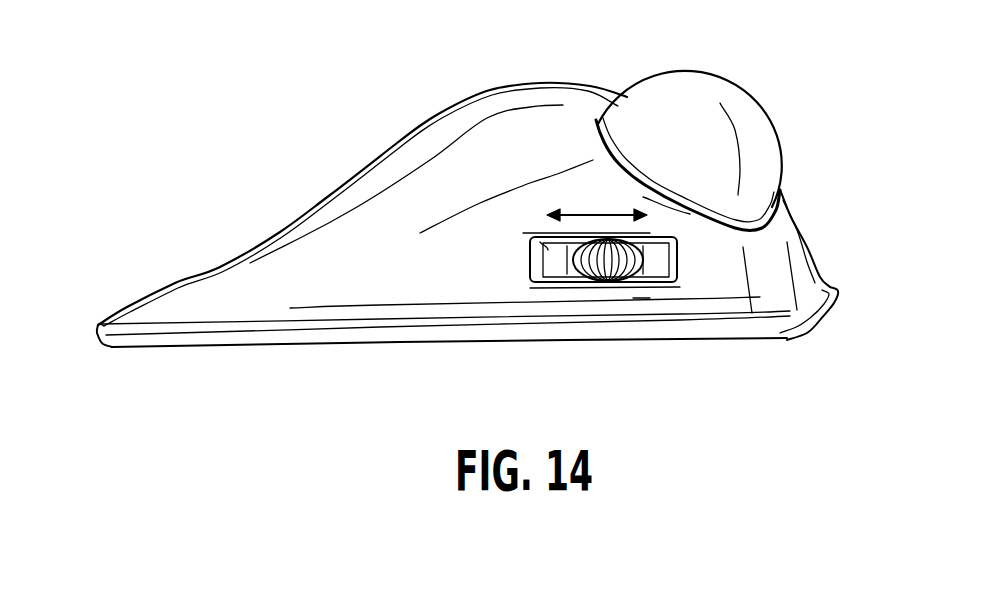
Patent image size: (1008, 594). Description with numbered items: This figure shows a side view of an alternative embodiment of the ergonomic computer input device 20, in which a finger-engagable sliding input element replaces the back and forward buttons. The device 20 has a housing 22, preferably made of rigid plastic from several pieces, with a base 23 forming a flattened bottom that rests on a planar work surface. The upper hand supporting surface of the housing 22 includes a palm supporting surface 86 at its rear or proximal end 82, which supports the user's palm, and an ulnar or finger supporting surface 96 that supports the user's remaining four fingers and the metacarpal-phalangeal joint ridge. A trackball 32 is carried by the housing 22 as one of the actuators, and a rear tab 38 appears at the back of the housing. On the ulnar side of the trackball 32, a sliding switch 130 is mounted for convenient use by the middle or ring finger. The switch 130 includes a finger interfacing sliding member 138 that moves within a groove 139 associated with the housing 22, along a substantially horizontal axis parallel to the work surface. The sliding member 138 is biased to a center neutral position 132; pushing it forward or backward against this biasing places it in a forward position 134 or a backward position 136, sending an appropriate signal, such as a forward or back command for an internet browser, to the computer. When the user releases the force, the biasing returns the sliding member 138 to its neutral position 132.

The ergonomic computer input device 20 is at (262, 100).
The housing 22 is at (430, 177).
The base 23 is at (145, 348).
The trackball 32 is at (730, 132).
The rear tab 38 is at (827, 280).
The proximal end 82 is at (128, 315).
The palm supporting surface 86 is at (220, 277).
The finger supporting surface 96 is at (522, 120).
The sliding switch 130 is at (575, 285).
The neutral position 132 is at (665, 222).
The forward position 134 is at (673, 277).
The backward position 136 is at (537, 257).
The sliding member 138 is at (613, 287).
The groove 139 is at (535, 235).